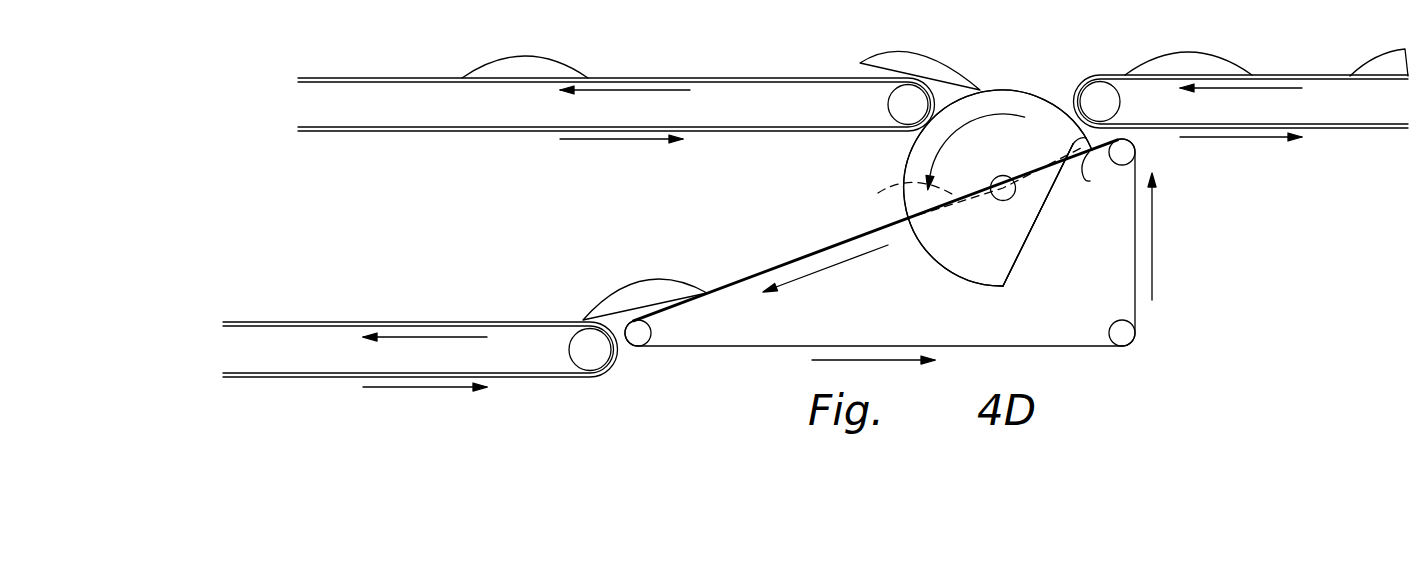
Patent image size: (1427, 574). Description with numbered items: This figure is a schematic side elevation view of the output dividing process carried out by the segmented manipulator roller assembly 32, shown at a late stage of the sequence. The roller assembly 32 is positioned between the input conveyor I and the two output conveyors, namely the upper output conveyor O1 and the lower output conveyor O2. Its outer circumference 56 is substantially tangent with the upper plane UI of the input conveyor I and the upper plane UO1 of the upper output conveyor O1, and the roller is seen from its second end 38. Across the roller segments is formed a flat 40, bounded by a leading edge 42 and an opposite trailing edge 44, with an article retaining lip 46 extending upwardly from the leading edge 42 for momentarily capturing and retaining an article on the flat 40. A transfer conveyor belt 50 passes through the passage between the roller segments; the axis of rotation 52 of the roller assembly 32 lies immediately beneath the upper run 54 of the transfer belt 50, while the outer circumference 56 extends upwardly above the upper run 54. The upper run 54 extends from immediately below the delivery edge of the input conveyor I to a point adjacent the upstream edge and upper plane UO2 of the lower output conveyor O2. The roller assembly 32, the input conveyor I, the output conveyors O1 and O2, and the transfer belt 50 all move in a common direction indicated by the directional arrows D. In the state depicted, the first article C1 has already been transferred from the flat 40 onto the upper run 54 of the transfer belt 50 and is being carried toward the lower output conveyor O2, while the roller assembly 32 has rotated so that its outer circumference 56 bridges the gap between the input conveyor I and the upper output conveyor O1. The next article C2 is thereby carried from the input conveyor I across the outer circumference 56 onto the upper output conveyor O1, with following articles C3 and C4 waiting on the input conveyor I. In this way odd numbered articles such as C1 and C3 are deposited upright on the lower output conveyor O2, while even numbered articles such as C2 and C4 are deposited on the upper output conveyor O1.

The roller assembly 32 is at (842, 158).
The second end 38 is at (1037, 163).
The flat 40 is at (1032, 236).
The leading edge 42 is at (1082, 143).
The trailing edge 44 is at (1012, 288).
The article retaining lip 46 is at (1084, 168).
The transfer conveyor belt 50 is at (1087, 346).
The axis of rotation 52 is at (1004, 201).
The upper run 54 is at (829, 245).
The outer circumference 56 is at (1010, 88).
The upper output conveyor O1 is at (456, 147).
The lower output conveyor O2 is at (557, 393).
The input conveyor I is at (1298, 183).
The upper plane of the upper output conveyor UO1 is at (702, 77).
The upper plane of the lower output conveyor UO2 is at (420, 322).
The upper plane of the input conveyor UI is at (1300, 74).
The article C1 is at (623, 289).
The article C2 is at (916, 57).
The article C3 is at (1180, 52).
The article C4 is at (1378, 58).
The directional arrows D is at (622, 139).